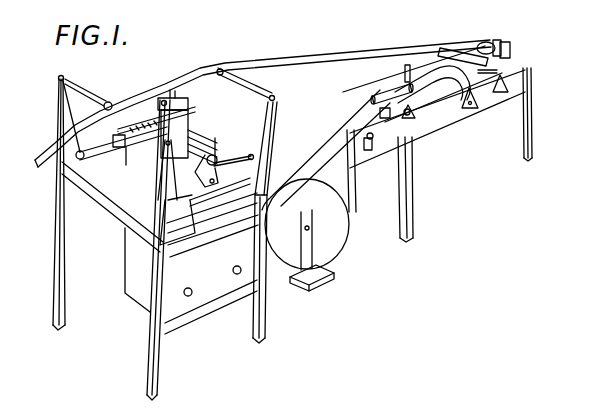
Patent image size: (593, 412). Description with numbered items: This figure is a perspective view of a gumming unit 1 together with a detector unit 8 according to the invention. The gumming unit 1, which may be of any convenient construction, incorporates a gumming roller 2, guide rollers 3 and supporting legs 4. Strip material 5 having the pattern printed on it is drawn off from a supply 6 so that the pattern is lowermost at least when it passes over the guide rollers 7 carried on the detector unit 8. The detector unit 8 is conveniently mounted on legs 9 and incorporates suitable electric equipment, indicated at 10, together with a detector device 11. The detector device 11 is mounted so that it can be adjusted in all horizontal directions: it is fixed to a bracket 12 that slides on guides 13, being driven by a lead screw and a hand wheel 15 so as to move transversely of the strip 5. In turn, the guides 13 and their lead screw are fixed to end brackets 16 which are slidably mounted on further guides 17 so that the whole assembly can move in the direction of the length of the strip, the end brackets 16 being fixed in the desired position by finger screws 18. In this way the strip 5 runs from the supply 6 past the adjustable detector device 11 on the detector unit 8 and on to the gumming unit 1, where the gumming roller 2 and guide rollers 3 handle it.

The gumming unit 1 is at (503, 98).
The gumming roller 2 is at (440, 101).
The guide rollers 3 is at (408, 115).
The supporting legs 4 is at (533, 137).
The strip material 5 is at (321, 53).
The supply 6 is at (320, 211).
The guide rollers 7 is at (107, 100).
The detector unit 8 is at (97, 199).
The legs 9 is at (268, 306).
The electric equipment 10 is at (205, 272).
The detector device 11 is at (182, 103).
The bracket 12 is at (170, 128).
The guides 13 is at (189, 142).
The hand wheel 15 is at (255, 157).
The end brackets 16 is at (127, 150).
The guides 17 is at (183, 202).
The finger screws 18 is at (218, 181).